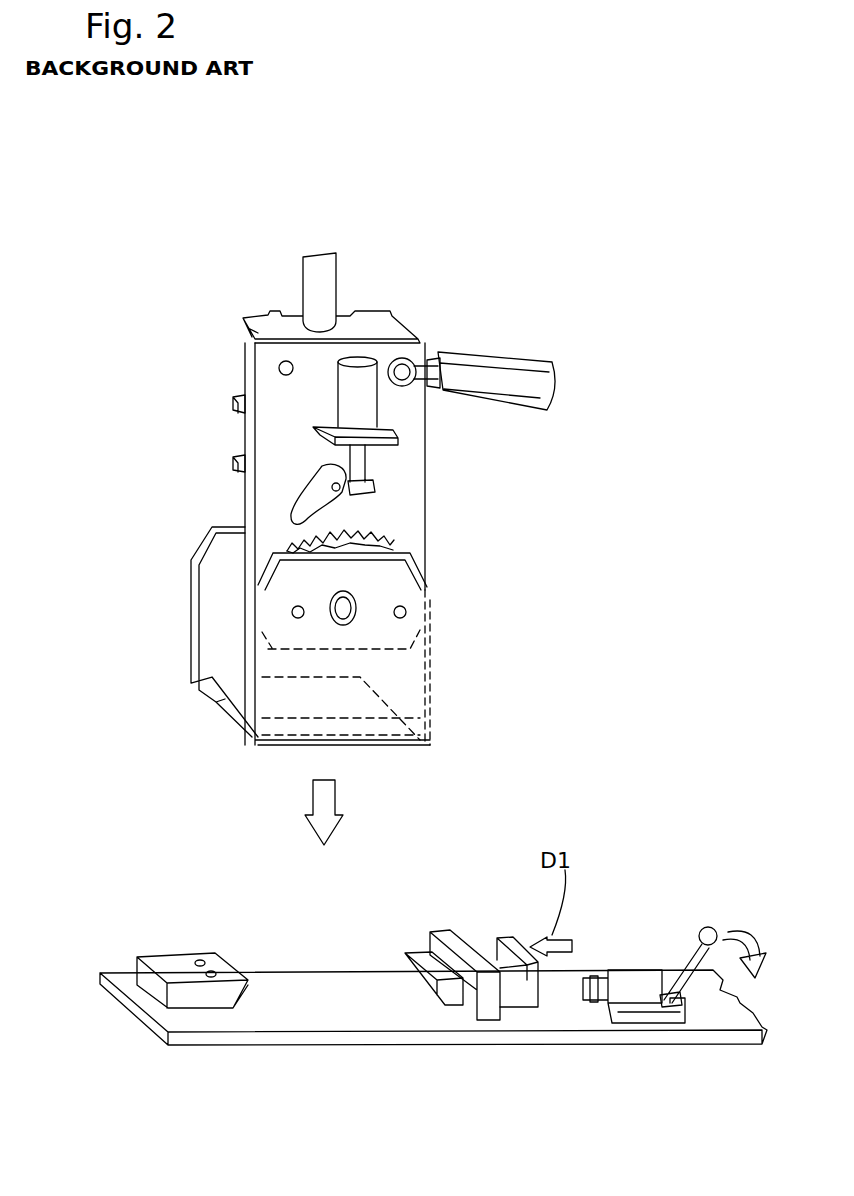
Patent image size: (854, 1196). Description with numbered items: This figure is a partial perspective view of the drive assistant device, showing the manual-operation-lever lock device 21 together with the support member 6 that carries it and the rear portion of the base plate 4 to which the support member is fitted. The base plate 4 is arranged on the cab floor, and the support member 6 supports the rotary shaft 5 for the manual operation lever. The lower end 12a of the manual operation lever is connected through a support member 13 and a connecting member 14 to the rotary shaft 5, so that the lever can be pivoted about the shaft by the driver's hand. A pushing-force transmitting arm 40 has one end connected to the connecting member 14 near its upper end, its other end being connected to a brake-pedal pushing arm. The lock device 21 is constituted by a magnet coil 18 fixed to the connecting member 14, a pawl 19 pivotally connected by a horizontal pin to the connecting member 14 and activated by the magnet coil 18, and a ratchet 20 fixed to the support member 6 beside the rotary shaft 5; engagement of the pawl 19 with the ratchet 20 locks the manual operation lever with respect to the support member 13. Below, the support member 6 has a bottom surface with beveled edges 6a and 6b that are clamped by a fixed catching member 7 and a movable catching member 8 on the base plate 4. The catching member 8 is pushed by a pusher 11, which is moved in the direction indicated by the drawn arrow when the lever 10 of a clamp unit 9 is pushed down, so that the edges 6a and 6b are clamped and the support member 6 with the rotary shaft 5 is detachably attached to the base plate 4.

The base plate 4 is at (365, 1023).
The rotary shaft 5 is at (357, 622).
The support member 6 is at (276, 661).
The beveled edge 6a is at (222, 705).
The beveled edge 6b is at (432, 703).
The fixed catching member 7 is at (173, 960).
The movable catching member 8 is at (420, 952).
The clamp unit 9 is at (672, 903).
The lever 10 is at (686, 965).
The pusher 11 is at (582, 960).
The lower end 12a is at (330, 286).
The support member 13 is at (392, 317).
The connecting member 14 is at (396, 503).
The magnet coil 18 is at (375, 402).
The pawl 19 is at (305, 495).
The ratchet 20 is at (396, 540).
The manual-operation-lever lock device 21 is at (368, 492).
The pushing-force transmitting arm 40 is at (510, 360).